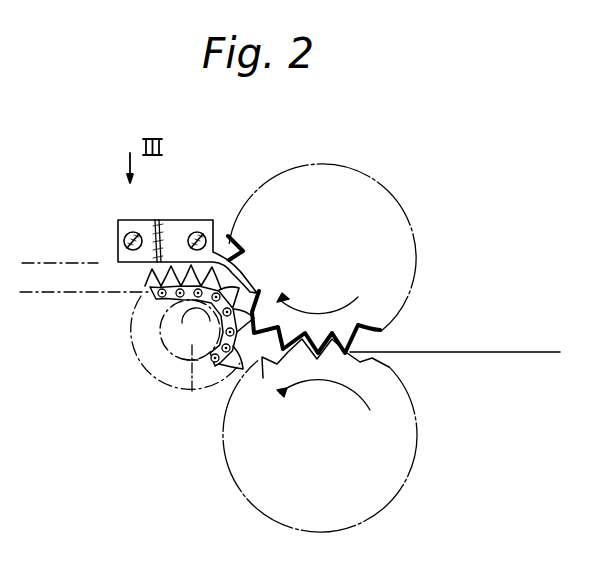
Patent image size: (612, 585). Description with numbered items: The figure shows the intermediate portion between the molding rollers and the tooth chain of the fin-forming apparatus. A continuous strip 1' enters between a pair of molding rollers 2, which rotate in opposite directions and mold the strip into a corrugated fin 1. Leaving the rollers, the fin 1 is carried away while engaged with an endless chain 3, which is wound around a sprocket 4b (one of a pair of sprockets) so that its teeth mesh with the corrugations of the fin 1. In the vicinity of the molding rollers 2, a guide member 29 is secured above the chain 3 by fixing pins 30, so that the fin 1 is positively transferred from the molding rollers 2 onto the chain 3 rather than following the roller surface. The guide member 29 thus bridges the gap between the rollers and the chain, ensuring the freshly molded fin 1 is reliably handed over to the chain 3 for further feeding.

The corrugated fin 1 is at (85, 258).
The continuous strip 1' is at (455, 328).
The molding rollers 2 is at (384, 219).
The endless chain 3 is at (142, 303).
The sprocket 4b is at (191, 388).
The guide member 29 is at (178, 224).
The fixing pin 30 is at (130, 232).